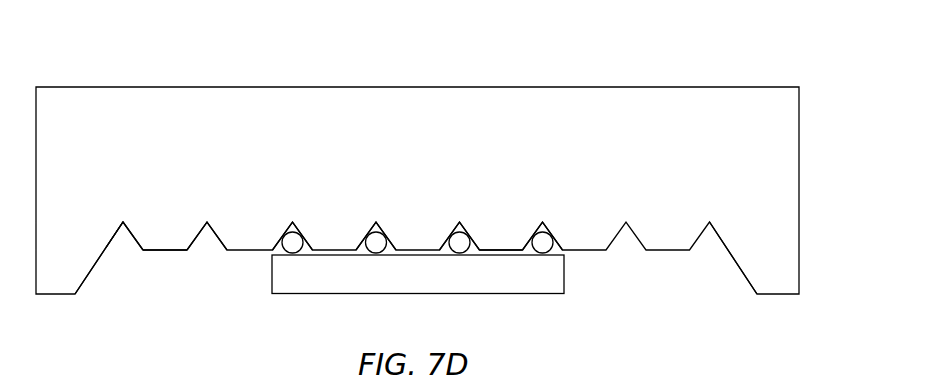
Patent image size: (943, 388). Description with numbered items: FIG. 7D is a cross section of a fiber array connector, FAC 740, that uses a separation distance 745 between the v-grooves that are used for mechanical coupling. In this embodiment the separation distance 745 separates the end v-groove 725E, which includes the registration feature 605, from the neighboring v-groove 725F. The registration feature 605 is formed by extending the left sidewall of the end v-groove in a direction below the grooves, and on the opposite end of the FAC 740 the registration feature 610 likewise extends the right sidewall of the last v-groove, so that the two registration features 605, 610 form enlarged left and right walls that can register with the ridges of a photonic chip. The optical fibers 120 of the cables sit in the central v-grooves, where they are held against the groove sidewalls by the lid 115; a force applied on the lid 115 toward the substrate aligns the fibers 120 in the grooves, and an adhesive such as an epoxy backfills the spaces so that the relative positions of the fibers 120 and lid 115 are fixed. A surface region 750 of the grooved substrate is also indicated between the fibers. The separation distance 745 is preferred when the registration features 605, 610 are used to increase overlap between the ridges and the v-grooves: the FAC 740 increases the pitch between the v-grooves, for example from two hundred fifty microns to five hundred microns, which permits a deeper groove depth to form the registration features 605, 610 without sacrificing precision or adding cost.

The fiber array connector (FAC) 740 is at (713, 56).
The v-groove 725E is at (133, 235).
The v-groove 725F is at (218, 235).
The optical fibers 120 is at (376, 222).
The surface 750 is at (504, 243).
The separation distance 745 is at (166, 258).
The registration feature 605 is at (104, 272).
The registration feature 610 is at (725, 268).
The lid 115 is at (433, 286).